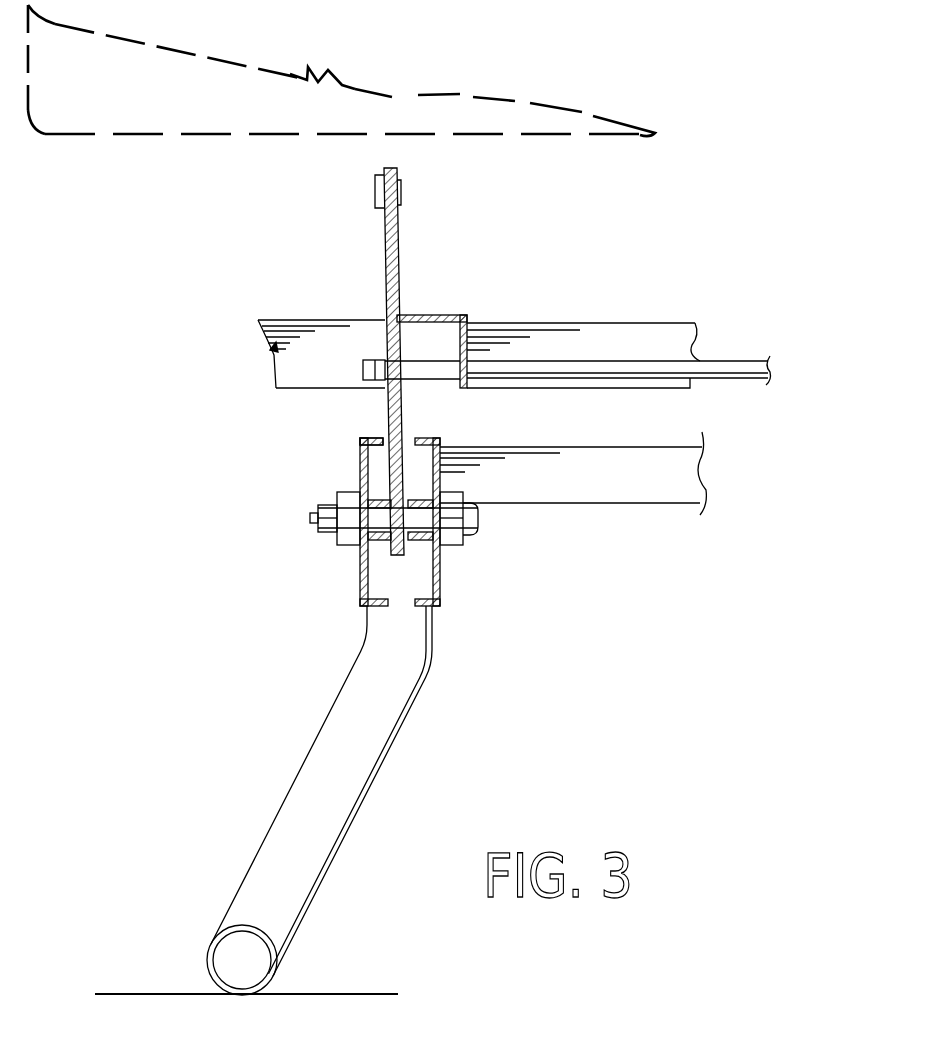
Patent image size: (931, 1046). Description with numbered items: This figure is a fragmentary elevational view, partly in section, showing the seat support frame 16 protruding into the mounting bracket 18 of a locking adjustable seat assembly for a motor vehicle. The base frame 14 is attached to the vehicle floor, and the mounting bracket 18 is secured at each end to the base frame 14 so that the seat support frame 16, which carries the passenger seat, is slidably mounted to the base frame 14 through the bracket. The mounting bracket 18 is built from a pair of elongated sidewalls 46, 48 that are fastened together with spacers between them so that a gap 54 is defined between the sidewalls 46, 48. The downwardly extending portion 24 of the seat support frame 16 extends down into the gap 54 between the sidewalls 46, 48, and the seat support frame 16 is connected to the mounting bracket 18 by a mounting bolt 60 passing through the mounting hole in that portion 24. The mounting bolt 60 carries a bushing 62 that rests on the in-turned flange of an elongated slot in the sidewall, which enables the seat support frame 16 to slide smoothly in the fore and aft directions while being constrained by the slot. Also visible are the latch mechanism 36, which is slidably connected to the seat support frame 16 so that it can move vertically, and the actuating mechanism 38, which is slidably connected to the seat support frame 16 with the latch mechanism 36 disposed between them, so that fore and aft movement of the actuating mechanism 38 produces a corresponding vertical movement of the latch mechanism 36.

The base frame 14 is at (290, 790).
The seat support frame 16 is at (403, 412).
The mounting bracket 18 is at (360, 577).
The downwardly extending portion 24 is at (372, 497).
The latch mechanism 36 is at (398, 270).
The actuating mechanism 38 is at (383, 280).
The sidewall 46 is at (362, 455).
The sidewall 48 is at (448, 470).
The gap 54 is at (387, 440).
The mounting bolt 60 is at (478, 530).
The bushing 62 is at (448, 545).